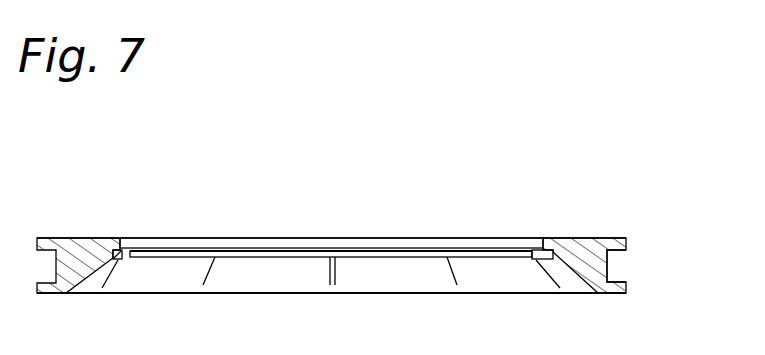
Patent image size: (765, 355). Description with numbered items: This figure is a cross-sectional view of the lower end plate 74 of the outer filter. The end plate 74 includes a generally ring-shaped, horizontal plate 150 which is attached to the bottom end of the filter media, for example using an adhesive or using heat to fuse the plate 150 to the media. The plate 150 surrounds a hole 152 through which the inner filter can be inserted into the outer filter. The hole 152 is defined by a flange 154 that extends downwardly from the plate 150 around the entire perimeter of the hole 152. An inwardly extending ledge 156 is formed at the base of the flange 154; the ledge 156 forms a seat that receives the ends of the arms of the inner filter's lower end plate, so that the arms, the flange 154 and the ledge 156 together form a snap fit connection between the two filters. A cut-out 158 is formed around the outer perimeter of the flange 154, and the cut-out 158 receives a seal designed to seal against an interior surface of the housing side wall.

The lower end plate 74 is at (340, 214).
The horizontal plate 150 is at (582, 239).
The hole 152 is at (182, 251).
The flange 154 is at (133, 238).
The ledge 156 is at (118, 263).
The cut-out 158 is at (618, 266).